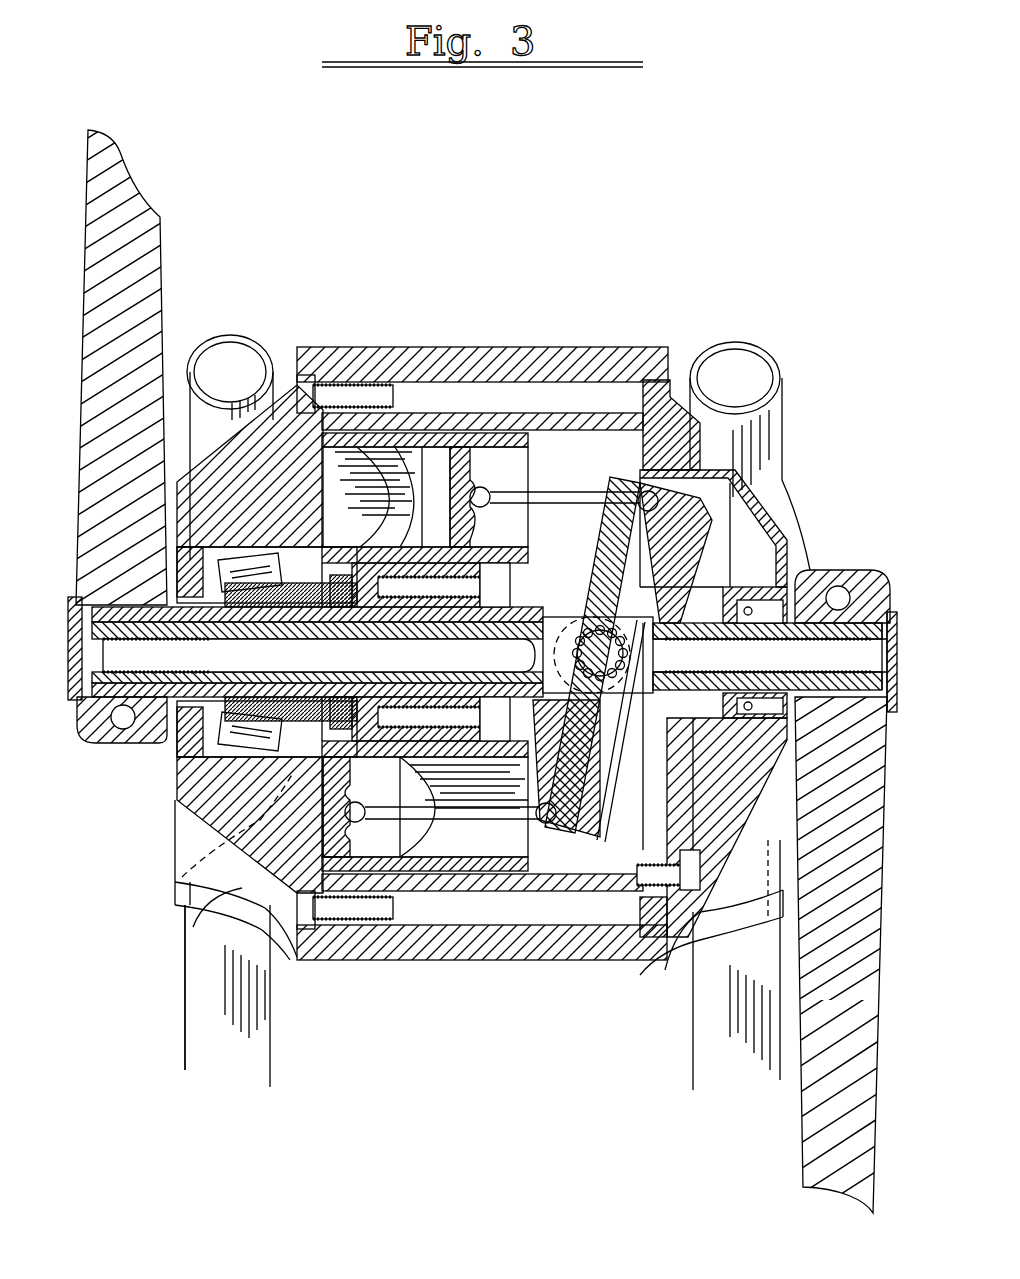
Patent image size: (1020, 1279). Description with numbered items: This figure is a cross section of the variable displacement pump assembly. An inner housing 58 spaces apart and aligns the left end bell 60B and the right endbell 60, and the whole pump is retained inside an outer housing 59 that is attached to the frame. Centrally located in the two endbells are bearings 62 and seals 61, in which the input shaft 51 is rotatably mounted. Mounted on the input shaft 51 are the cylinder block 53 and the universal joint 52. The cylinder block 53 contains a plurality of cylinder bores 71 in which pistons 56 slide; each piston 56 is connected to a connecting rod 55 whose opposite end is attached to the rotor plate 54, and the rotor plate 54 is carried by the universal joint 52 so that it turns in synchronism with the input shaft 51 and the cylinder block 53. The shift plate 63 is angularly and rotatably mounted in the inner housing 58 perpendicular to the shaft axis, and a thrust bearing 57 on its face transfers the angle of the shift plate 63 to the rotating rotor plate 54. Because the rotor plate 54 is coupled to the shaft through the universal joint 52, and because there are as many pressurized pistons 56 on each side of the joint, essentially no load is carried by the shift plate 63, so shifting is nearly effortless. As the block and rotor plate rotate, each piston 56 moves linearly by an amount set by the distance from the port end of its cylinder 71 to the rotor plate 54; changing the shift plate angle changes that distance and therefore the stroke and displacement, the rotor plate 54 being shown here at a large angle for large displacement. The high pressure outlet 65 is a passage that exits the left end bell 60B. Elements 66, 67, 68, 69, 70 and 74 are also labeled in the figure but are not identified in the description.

The input shaft 51 is at (470, 460).
The universal joint 52 is at (555, 520).
The cylinder block 53 is at (355, 390).
The rotor plate 54 is at (585, 500).
The connecting rods 55 is at (525, 470).
The pistons 56 is at (415, 405).
The thrust bearing 57 is at (625, 520).
The inner housing 58 is at (430, 940).
The outer housing 59 is at (540, 935).
The right endbell 60 is at (700, 410).
The left end bell 60B is at (222, 430).
The seals 61 is at (200, 790).
The bearings 62 is at (245, 885).
The shift plate 63 is at (625, 890).
The high pressure outlet 65 is at (182, 915).
The screw 66 is at (350, 915).
The end cap 67 is at (262, 415).
The bearing 68 is at (250, 450).
The lug 69 is at (172, 700).
The support block 70 is at (690, 925).
The cylinder bores 71 is at (395, 880).
The yoke plate 74 is at (487, 860).